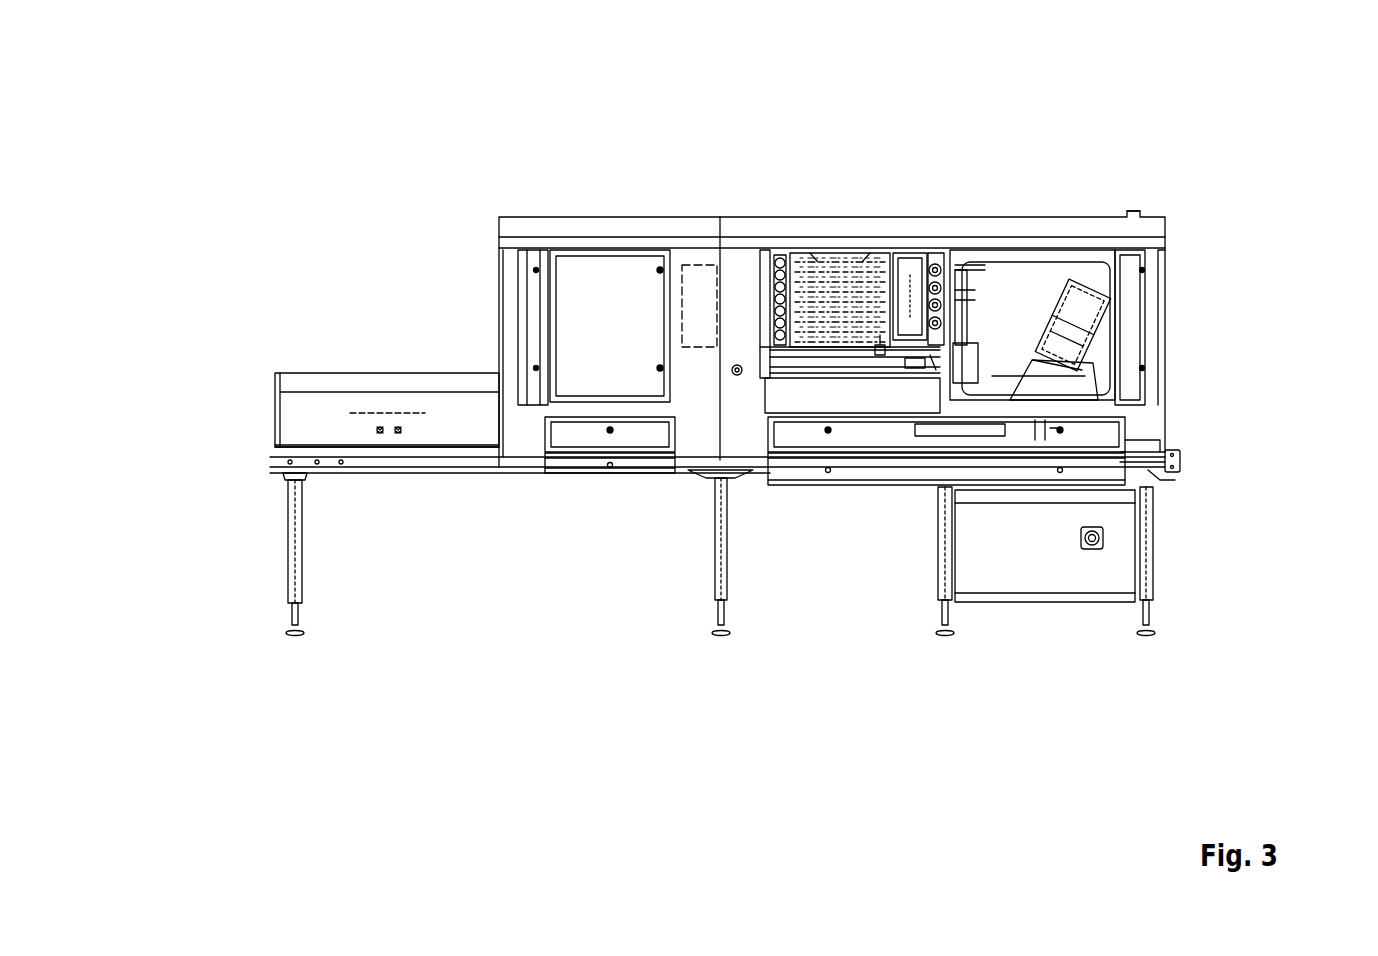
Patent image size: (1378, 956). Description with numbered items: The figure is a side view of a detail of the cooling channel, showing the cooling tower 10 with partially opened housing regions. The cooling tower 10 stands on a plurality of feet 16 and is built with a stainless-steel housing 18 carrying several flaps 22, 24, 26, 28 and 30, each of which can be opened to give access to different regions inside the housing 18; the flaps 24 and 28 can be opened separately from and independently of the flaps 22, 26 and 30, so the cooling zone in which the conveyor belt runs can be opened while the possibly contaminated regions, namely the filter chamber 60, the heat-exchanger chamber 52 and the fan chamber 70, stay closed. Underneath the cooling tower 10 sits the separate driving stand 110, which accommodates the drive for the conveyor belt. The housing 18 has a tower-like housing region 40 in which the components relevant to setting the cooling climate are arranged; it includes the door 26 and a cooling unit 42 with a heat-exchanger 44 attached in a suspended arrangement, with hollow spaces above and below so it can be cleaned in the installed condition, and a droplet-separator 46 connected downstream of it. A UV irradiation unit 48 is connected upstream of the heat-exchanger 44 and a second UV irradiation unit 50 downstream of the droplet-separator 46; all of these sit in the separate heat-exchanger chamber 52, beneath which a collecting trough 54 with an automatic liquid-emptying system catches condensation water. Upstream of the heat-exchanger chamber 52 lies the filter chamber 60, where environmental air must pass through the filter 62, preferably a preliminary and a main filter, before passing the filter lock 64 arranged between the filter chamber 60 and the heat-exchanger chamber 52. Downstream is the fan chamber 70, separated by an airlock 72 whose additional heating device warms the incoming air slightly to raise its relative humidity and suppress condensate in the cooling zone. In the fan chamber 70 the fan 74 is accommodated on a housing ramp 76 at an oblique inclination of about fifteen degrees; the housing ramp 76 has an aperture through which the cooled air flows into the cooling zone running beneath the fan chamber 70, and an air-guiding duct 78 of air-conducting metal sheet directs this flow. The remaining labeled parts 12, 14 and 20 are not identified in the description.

The cooling tower 10 is at (350, 264).
The infeed table 12 is at (274, 396).
The bracket 14 is at (1180, 475).
The feet 16 is at (288, 568).
The housing 18 is at (513, 220).
The table plate 20 is at (480, 428).
The flap 22 is at (517, 275).
The flap 24 is at (595, 468).
The flap (door) 26 is at (767, 290).
The flap 28 is at (913, 468).
The flap 30 is at (1157, 300).
The tower-like housing region 40 is at (1143, 225).
The cooling unit 42 is at (833, 245).
The heat-exchanger 44 is at (870, 285).
The droplet-separator 46 is at (915, 282).
The UV irradiation unit 48 is at (780, 262).
The second UV irradiation unit 50 is at (937, 265).
The heat-exchanger chamber 52 is at (800, 380).
The collecting trough 54 is at (878, 355).
The filter chamber 60 is at (587, 272).
The filter 62 is at (680, 282).
The filter lock 64 is at (717, 282).
The fan chamber 70 is at (1087, 285).
The airlock 72 is at (962, 272).
The fan 74 is at (1073, 318).
The housing ramp 76 is at (1055, 382).
The air-guiding duct 78 is at (1027, 422).
The driving stand 110 is at (1040, 595).